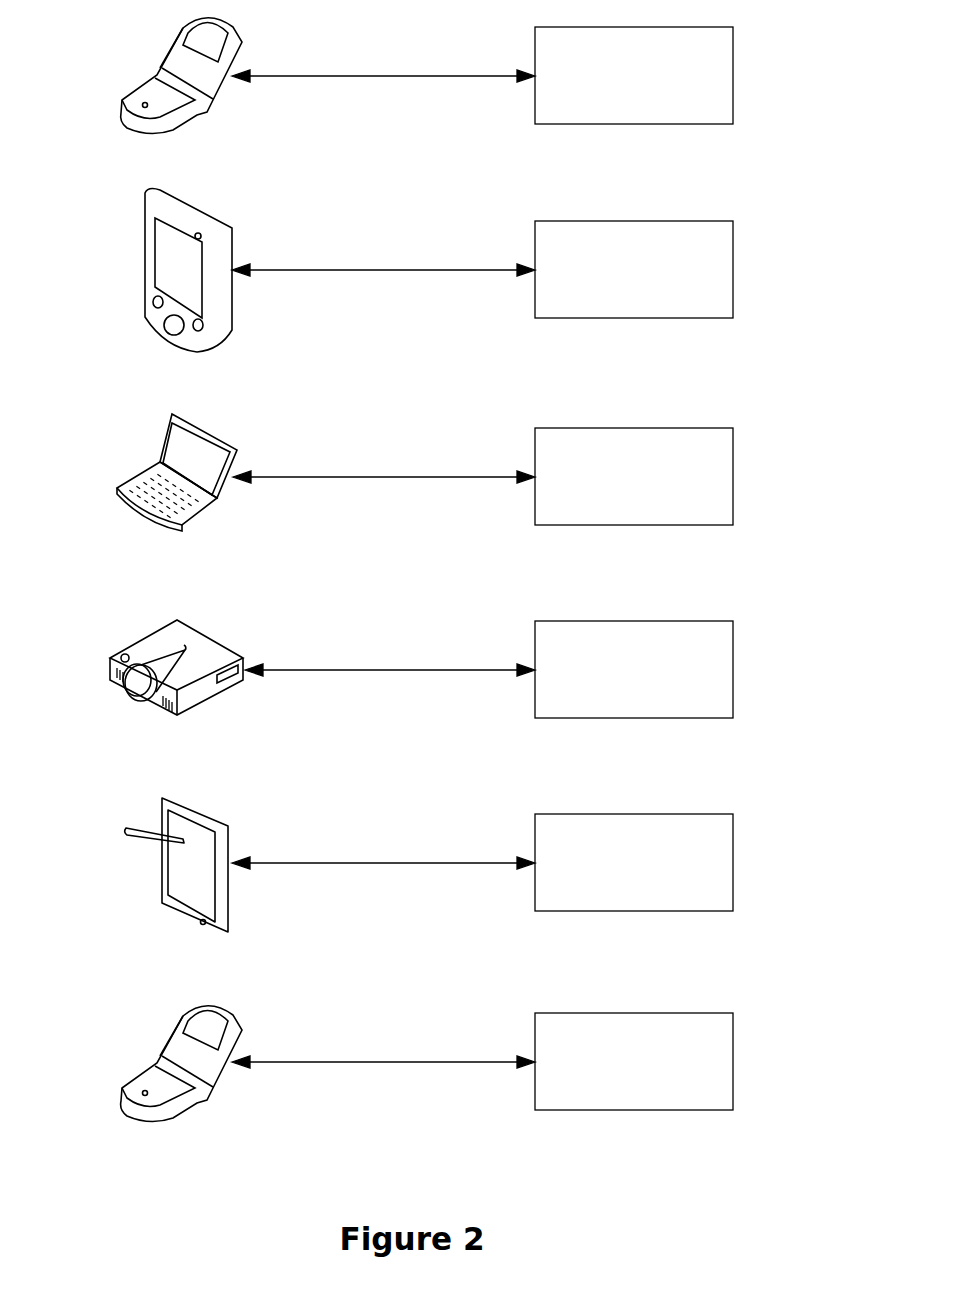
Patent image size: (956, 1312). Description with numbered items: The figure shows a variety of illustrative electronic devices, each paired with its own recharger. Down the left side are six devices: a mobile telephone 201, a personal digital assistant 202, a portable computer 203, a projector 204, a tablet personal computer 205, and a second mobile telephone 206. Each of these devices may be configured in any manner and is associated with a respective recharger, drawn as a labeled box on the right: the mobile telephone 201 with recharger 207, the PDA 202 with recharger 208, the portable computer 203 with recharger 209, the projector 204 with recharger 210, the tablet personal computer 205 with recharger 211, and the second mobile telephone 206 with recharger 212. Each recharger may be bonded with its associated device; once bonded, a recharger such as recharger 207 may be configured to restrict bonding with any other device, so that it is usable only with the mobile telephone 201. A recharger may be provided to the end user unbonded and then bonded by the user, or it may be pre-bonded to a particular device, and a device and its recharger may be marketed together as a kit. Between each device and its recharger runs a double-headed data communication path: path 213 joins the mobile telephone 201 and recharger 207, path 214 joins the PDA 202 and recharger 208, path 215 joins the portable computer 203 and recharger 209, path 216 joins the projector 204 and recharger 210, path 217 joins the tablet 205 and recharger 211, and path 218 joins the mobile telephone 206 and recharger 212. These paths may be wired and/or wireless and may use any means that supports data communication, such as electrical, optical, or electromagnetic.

The mobile telephone 201 is at (175, 27).
The personal digital assistant (PDA) 202 is at (145, 201).
The portable computer 203 is at (170, 422).
The projector 204 is at (155, 632).
The tablet personal computer 205 is at (163, 798).
The mobile telephone 206 is at (175, 1023).
The recharger 207 is at (735, 28).
The recharger 208 is at (735, 222).
The recharger 209 is at (735, 429).
The recharger 210 is at (735, 622).
The recharger 211 is at (735, 815).
The recharger 212 is at (735, 1014).
The data communication path 213 is at (394, 76).
The data communication path 214 is at (394, 270).
The data communication path 215 is at (394, 477).
The data communication path 216 is at (394, 670).
The data communication path 217 is at (394, 863).
The data communication path 218 is at (394, 1062).